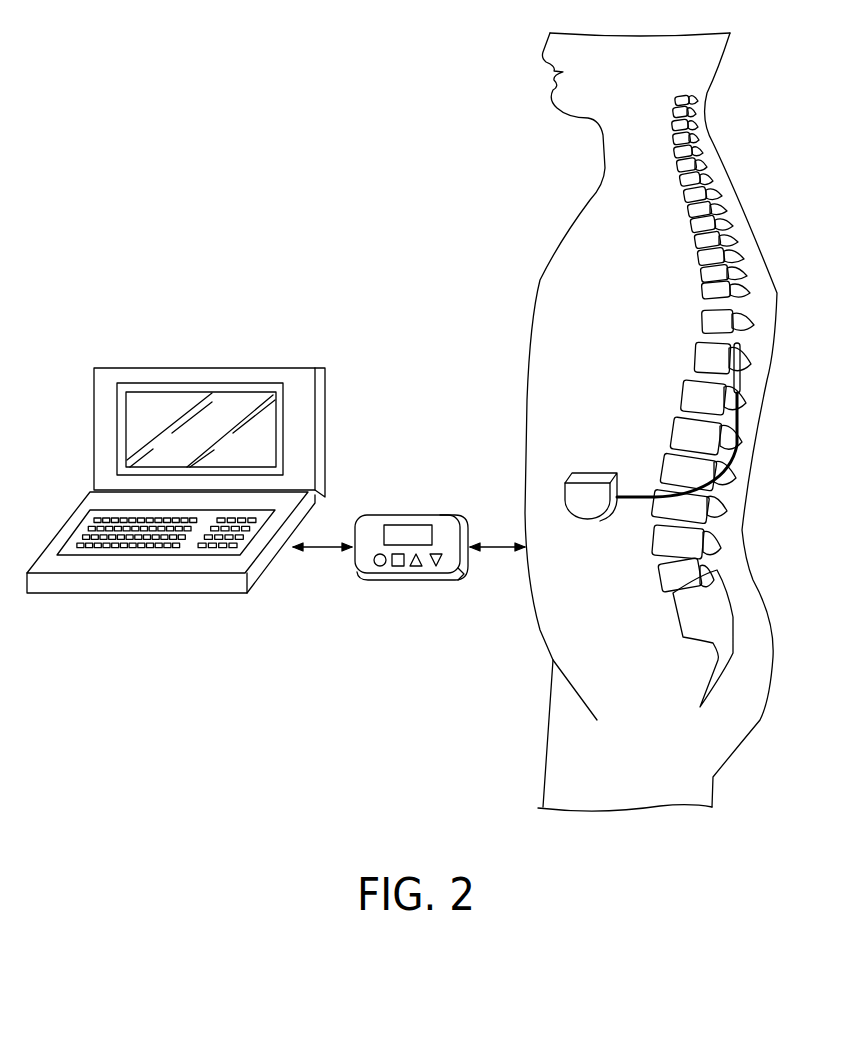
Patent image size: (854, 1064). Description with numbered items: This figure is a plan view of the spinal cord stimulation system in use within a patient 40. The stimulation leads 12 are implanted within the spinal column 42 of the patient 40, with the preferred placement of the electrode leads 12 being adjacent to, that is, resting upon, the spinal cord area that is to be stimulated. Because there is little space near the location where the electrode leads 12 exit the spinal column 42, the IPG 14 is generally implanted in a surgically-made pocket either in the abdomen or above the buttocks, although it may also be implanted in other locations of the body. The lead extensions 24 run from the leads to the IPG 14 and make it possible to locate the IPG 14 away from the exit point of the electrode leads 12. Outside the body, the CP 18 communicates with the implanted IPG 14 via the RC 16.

The stimulation leads 12 is at (742, 372).
The IPG 14 is at (592, 507).
The RC 16 is at (431, 500).
The CP 18 is at (186, 366).
The lead extensions 24 is at (742, 450).
The patient 40 is at (538, 285).
The spinal column 42 is at (700, 345).